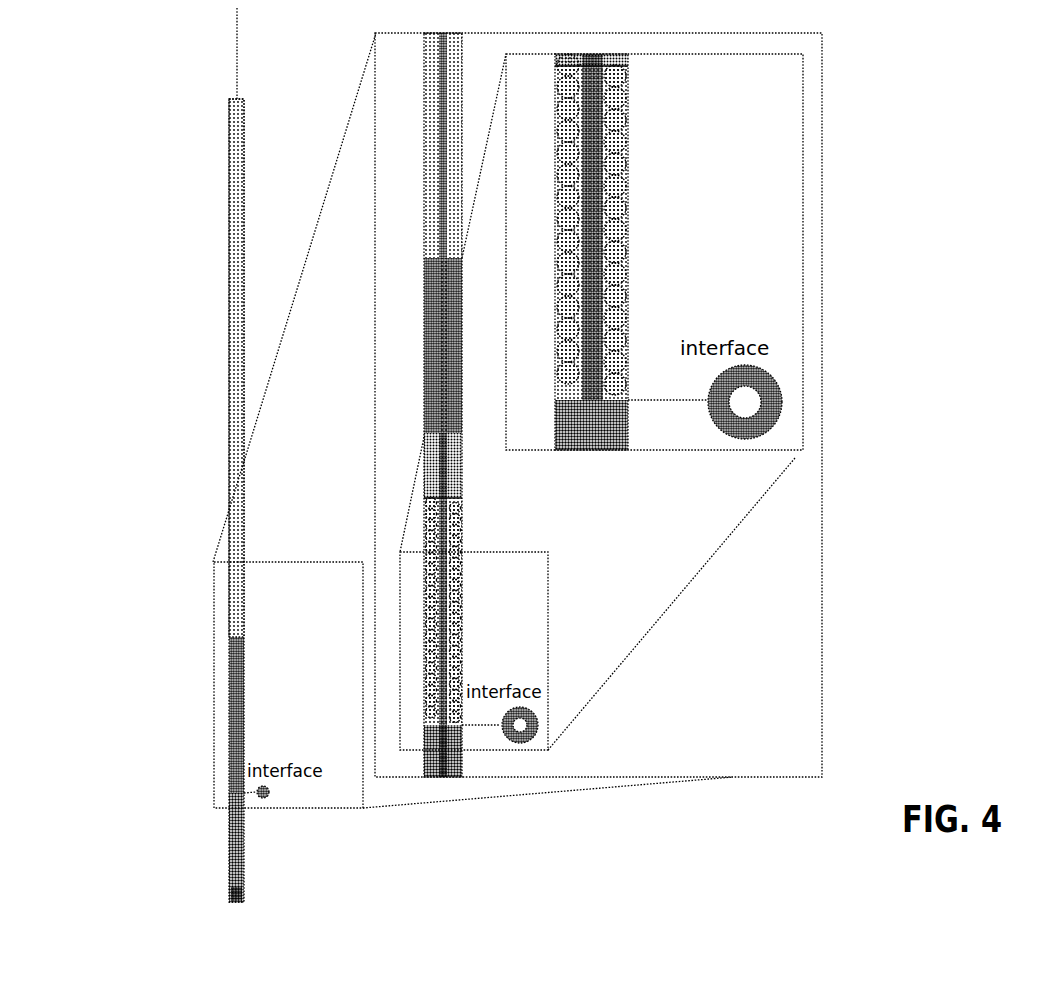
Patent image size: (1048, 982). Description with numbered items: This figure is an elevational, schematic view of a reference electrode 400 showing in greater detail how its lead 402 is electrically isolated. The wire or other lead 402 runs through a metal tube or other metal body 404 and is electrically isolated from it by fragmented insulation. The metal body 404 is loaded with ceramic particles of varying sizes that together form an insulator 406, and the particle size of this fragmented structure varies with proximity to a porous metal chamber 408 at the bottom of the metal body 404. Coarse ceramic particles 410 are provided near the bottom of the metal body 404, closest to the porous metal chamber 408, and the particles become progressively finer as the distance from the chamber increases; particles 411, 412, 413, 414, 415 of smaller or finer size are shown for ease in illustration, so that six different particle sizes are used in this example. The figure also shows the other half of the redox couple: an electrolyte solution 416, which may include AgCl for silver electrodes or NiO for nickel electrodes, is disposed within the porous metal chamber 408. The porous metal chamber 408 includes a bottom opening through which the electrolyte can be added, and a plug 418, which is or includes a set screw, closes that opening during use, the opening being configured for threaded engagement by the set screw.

The reference electrode 400 is at (108, 40).
The lead 402 is at (237, 50).
The metal body 404 is at (246, 250).
The insulator 406 is at (244, 717).
The porous metal chamber 408 is at (246, 824).
The coarse ceramic particles 410 is at (458, 682).
The particles 411 is at (460, 628).
The particles 412 is at (430, 508).
The particles 413 is at (453, 472).
The particles 414 is at (455, 377).
The particles 415 is at (455, 318).
The electrolyte solution 416 is at (455, 758).
The plug 418 is at (239, 897).